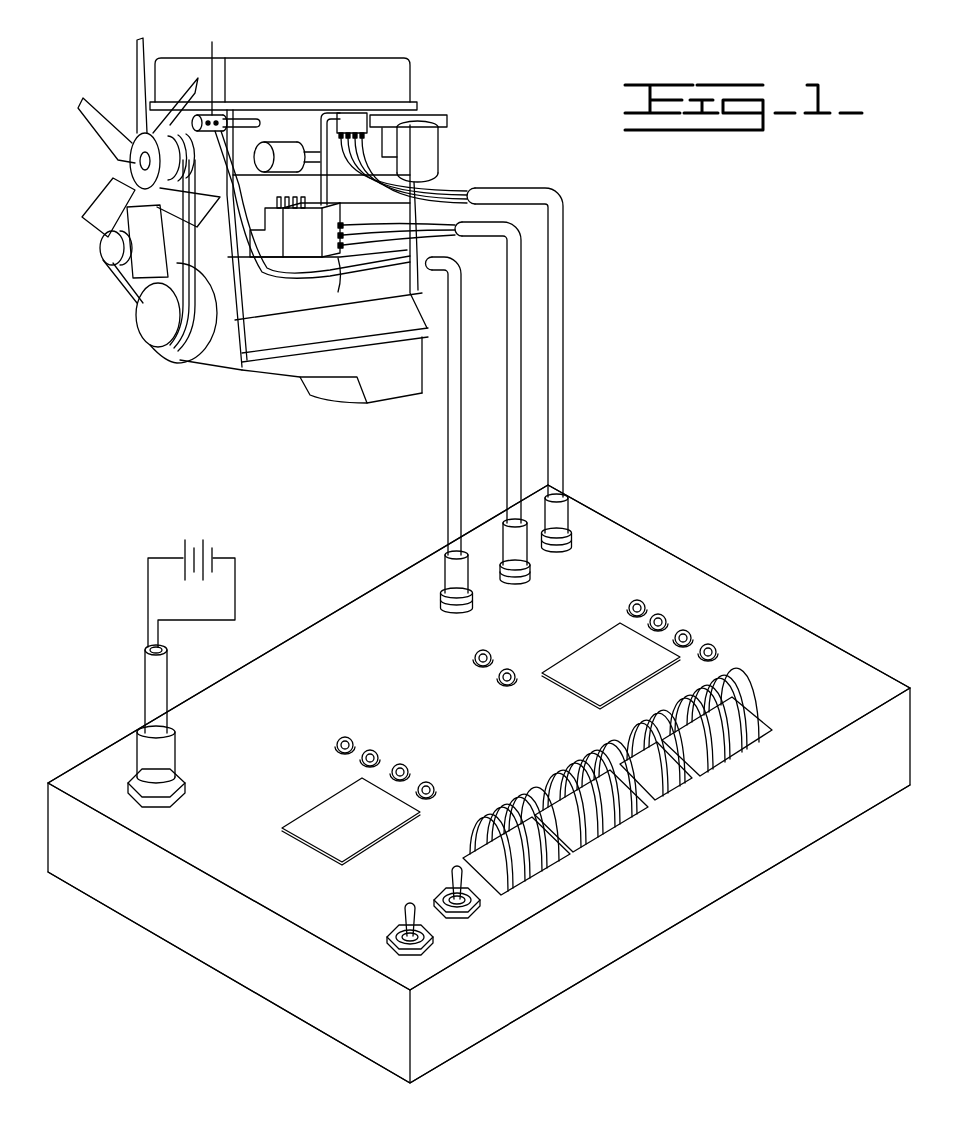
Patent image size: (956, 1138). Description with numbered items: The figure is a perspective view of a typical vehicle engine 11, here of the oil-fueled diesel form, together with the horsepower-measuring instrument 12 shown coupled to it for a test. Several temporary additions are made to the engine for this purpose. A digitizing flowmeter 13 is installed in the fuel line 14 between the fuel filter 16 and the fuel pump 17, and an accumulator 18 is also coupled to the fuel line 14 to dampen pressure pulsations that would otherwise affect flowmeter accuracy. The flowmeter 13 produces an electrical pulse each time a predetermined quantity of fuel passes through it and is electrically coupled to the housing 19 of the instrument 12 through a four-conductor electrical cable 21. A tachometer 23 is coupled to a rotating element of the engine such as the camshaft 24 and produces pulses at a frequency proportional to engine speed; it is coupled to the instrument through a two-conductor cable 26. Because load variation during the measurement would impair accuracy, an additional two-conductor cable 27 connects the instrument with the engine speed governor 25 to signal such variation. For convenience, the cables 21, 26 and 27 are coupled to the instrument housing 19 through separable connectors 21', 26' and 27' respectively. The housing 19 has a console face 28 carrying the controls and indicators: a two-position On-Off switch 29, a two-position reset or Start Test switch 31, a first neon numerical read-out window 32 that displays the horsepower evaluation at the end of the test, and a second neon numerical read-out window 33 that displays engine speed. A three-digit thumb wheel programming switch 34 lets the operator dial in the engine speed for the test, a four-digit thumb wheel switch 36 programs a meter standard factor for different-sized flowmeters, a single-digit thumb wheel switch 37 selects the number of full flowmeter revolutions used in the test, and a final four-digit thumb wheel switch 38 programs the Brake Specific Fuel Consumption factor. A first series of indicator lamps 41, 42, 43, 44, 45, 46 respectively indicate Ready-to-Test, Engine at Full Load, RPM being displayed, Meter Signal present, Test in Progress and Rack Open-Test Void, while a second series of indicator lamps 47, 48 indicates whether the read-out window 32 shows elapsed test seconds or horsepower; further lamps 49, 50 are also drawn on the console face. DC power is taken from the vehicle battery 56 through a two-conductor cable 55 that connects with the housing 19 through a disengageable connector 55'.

The vehicle engine 11 is at (350, 48).
The horsepower-measuring instrument 12 is at (693, 531).
The digitizing flowmeter 13 is at (360, 112).
The fuel line 14 is at (323, 115).
The fuel filter 16 is at (430, 158).
The fuel pump 17 is at (318, 252).
The accumulator 18 is at (272, 145).
The instrument housing 19 is at (325, 1020).
The four-conductor electrical cable 21 is at (536, 342).
The separable connector 21' is at (588, 512).
The tachometer 23 is at (213, 60).
The camshaft 24 is at (243, 117).
The engine speed governor 25 is at (338, 262).
The two-conductor cable 26 is at (428, 406).
The separable connector 26' is at (432, 582).
The two-conductor cable 27 is at (488, 372).
The separable connector 27' is at (542, 558).
The console face 28 is at (238, 840).
The On-Off switch 29 is at (400, 912).
The Start Test switch 31 is at (450, 885).
The first neon numerical read-out window 32 is at (622, 677).
The second neon numerical read-out window 33 is at (362, 830).
The three-digit thumb wheel programming switch 34 is at (500, 840).
The second thumb wheel programming switch 36 is at (578, 790).
The single-digit thumb wheel programming switch 37 is at (645, 750).
The final thumb wheel switch 38 is at (700, 716).
The indicator lamp 41 is at (345, 736).
The indicator lamp 42 is at (372, 750).
The indicator lamp 43 is at (403, 766).
The indicator lamp 44 is at (430, 786).
The indicator lamp 45 is at (477, 655).
The indicator lamp 46 is at (500, 678).
The indicator lamp 47 is at (639, 600).
The indicator lamp 48 is at (661, 614).
The indicator 49 is at (687, 630).
The indicator 50 is at (715, 650).
The two-conductor cable 55 is at (126, 688).
The disengageable connector 55' is at (124, 762).
The battery 56 is at (212, 552).